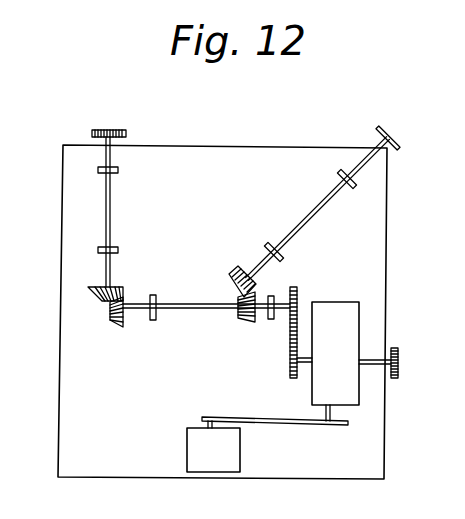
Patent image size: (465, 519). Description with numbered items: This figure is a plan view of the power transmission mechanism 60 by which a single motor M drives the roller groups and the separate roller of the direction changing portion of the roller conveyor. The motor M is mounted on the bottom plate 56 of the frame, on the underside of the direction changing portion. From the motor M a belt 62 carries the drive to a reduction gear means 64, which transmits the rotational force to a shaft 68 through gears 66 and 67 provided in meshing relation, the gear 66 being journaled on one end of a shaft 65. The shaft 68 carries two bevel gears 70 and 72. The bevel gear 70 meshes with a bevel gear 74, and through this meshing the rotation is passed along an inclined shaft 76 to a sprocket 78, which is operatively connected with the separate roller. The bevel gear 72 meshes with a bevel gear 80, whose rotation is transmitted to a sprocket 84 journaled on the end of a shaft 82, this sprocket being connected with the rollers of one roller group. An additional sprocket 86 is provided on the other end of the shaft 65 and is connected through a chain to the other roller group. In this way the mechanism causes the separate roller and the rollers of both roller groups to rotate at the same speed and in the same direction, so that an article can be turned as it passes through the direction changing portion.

The bottom plate 56 is at (153, 403).
The power transmission mechanism 60 is at (219, 207).
The belt 62 is at (285, 425).
The reduction gear means 64 is at (359, 327).
The shaft 65 is at (304, 363).
The gear 66 is at (290, 373).
The gear 67 is at (297, 296).
The shaft 68 is at (199, 310).
The bevel gear 70 is at (246, 325).
The bevel gear 72 is at (113, 322).
The bevel gear 74 is at (228, 271).
The shaft 76 is at (318, 210).
The sprocket 78 is at (398, 140).
The bevel gear 80 is at (90, 296).
The shaft 82 is at (111, 191).
The sprocket 84 is at (110, 129).
The sprocket 86 is at (398, 371).